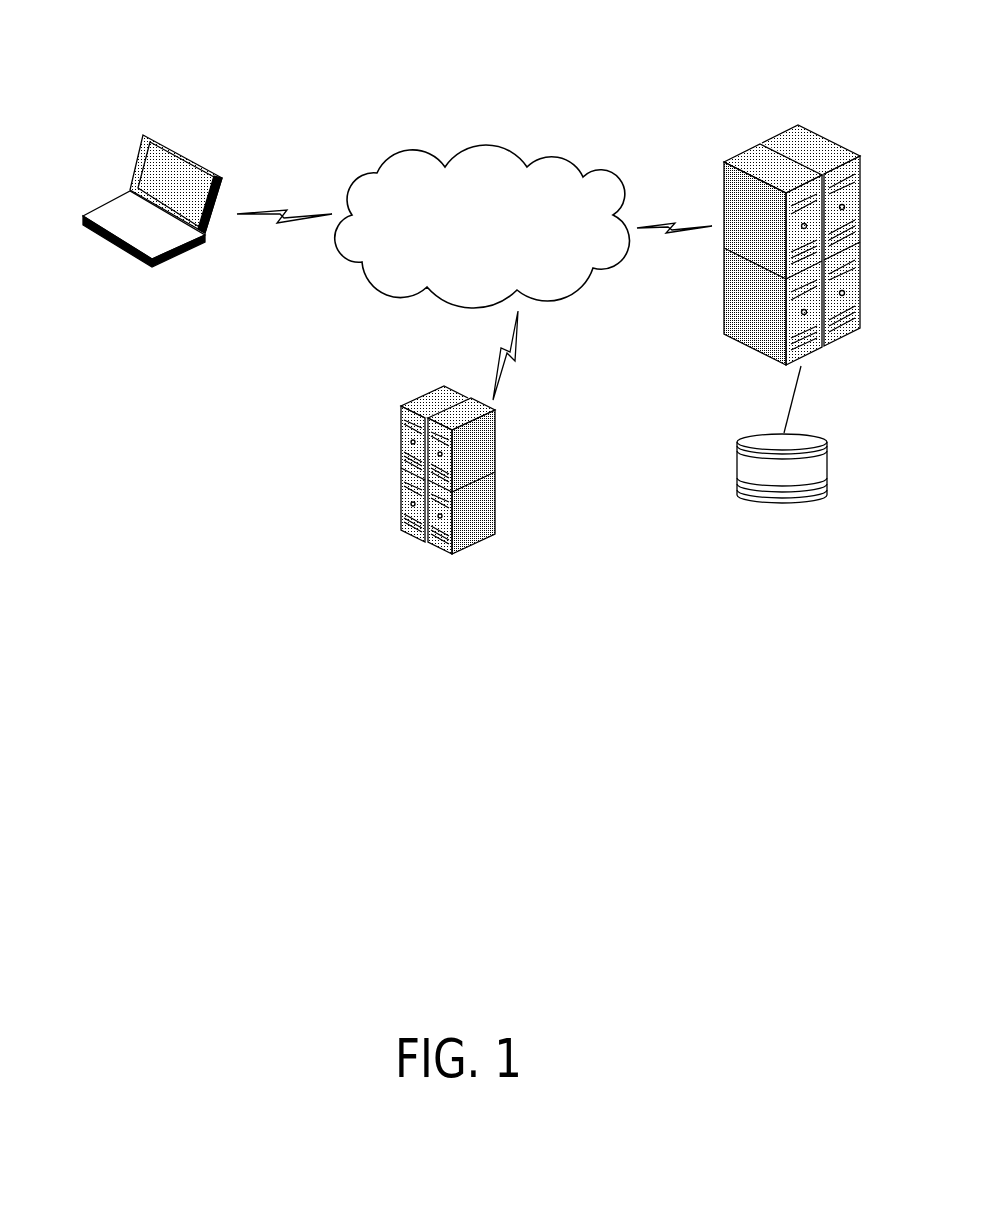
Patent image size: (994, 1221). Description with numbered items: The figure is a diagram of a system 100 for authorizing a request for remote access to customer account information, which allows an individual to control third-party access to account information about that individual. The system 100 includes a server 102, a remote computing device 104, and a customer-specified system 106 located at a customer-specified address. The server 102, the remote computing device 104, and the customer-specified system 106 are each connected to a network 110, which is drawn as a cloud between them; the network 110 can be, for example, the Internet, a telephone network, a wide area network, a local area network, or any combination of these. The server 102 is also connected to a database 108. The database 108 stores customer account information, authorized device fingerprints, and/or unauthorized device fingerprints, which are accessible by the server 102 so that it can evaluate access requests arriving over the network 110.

The system 100 is at (475, 285).
The server 102 is at (833, 141).
The remote computing device 104 is at (120, 258).
The customer-specified system 106 is at (497, 468).
The database 108 is at (785, 507).
The network 110 is at (482, 226).